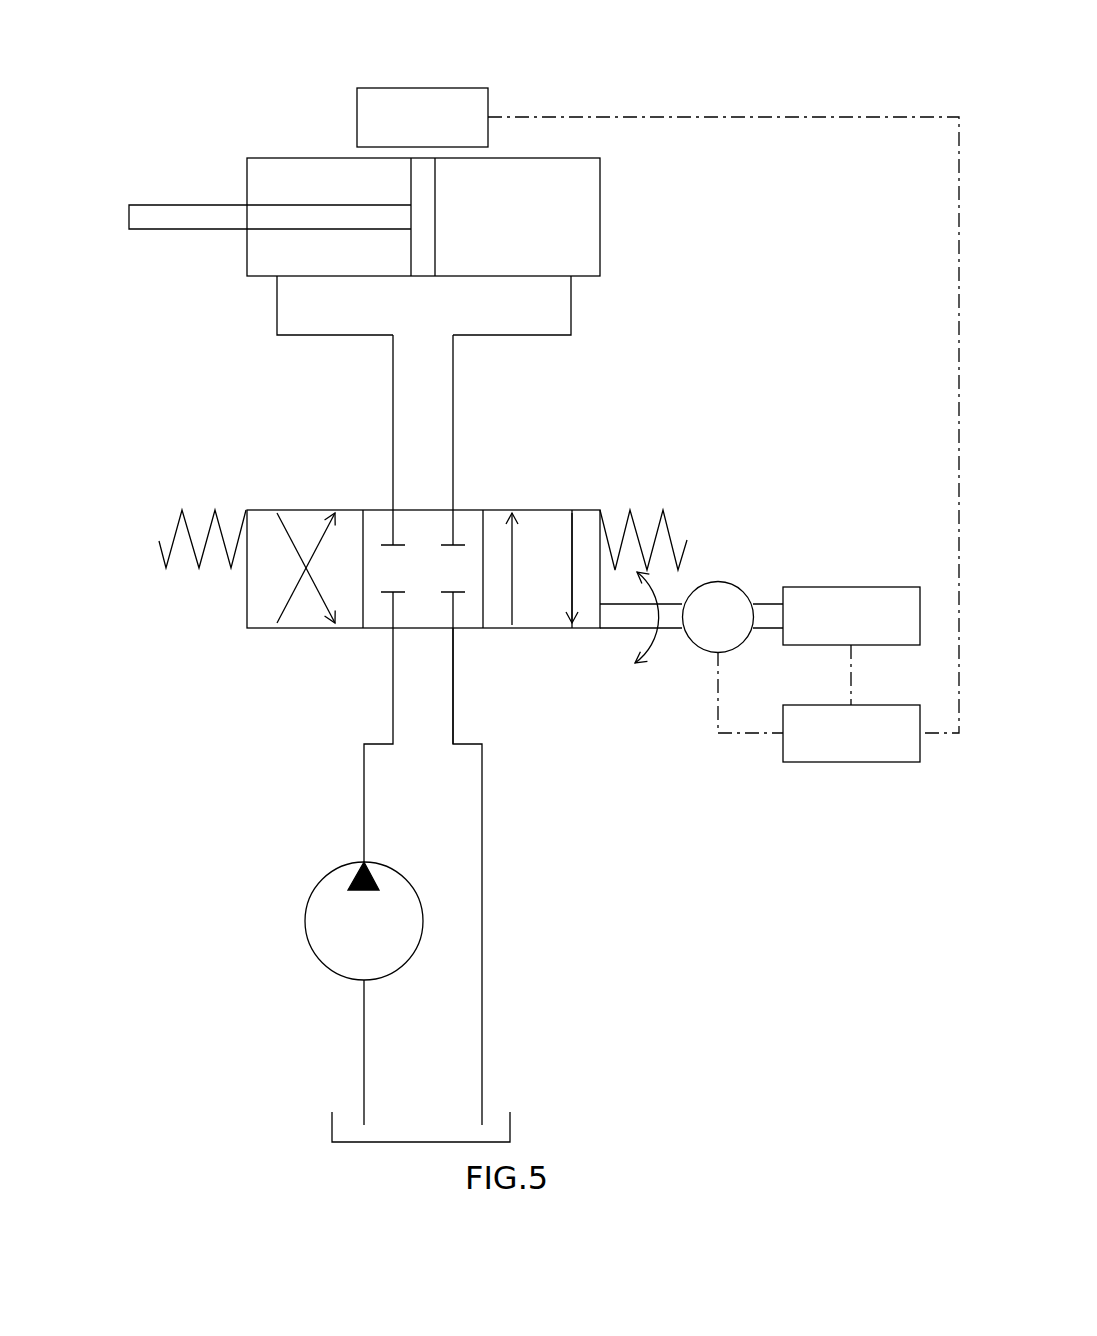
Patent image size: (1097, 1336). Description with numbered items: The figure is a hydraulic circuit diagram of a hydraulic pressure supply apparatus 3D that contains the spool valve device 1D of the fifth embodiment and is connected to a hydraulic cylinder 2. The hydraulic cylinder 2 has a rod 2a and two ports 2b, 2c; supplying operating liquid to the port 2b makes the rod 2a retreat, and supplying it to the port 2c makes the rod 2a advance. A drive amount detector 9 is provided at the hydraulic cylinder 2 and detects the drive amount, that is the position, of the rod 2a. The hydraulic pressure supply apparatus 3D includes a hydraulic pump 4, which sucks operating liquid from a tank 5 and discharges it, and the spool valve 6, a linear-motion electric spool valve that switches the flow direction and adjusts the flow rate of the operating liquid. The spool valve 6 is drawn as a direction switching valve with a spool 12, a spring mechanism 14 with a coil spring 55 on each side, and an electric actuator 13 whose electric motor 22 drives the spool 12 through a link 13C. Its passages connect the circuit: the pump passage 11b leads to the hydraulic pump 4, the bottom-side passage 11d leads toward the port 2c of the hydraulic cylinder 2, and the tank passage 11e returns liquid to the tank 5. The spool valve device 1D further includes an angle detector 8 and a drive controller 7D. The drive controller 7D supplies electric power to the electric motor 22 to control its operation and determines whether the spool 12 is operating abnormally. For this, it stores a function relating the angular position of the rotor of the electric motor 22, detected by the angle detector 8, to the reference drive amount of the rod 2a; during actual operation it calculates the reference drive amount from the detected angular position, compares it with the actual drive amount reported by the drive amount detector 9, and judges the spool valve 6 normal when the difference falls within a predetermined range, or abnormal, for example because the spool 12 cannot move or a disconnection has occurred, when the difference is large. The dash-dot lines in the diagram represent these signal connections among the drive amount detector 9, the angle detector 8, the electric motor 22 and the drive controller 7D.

The spool valve device 1D is at (866, 85).
The drive amount detector 9 is at (425, 95).
The hydraulic pressure supply apparatus 3D is at (343, 249).
The hydraulic cylinder 2 is at (598, 184).
The rod 2a is at (432, 184).
The port 2b is at (277, 278).
The port 2c is at (571, 278).
The bottom-side passage 11d is at (393, 488).
The spool valve 6 is at (410, 546).
The spring mechanism 14 is at (200, 587).
The spool 12 is at (586, 520).
The coil spring 55 is at (175, 534).
The pump passage 11b is at (393, 680).
The tank passage 11e is at (453, 680).
The hydraulic pump 4 is at (317, 946).
The tank 5 is at (493, 1125).
The electric actuator 13 is at (691, 592).
The electric actuator 13C is at (664, 655).
The electric motor 22 is at (728, 593).
The angle detector 8 is at (873, 587).
The drive controller 7D is at (872, 762).